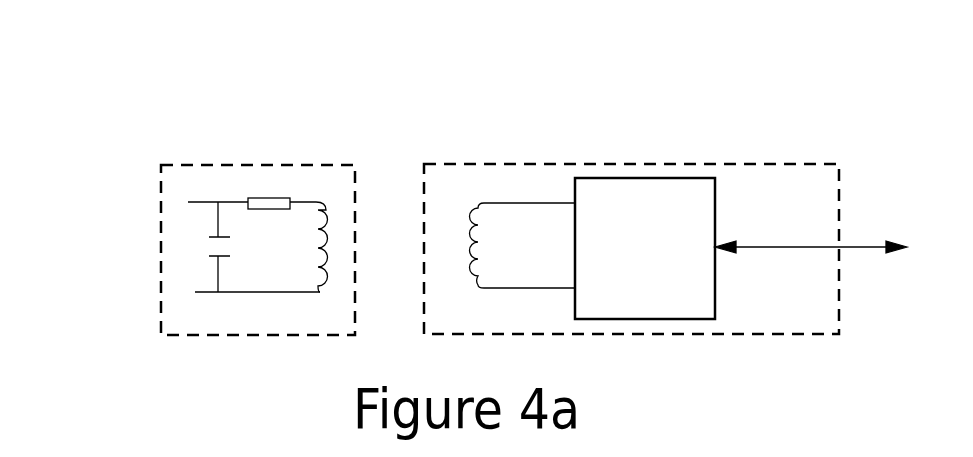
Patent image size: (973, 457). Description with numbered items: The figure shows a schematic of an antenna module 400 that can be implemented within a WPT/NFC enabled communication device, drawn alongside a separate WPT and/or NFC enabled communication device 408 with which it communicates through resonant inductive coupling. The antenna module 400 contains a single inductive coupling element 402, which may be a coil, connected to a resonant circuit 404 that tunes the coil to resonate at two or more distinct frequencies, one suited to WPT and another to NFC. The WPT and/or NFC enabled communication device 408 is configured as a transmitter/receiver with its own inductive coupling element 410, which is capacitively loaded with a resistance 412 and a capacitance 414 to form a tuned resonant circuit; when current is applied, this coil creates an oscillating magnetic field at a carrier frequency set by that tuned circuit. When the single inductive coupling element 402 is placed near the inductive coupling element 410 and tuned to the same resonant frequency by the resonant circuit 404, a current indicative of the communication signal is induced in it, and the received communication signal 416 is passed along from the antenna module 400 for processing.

The antenna module 400 is at (665, 335).
The single inductive coupling element 402 is at (468, 245).
The resonant circuit 404 is at (647, 178).
The WPT and/or NFC enabled communication device 408 is at (245, 335).
The inductive coupling element 410 is at (317, 238).
The resistance 412 is at (268, 197).
The capacitance 414 is at (215, 265).
The received communication signal 416 is at (850, 247).